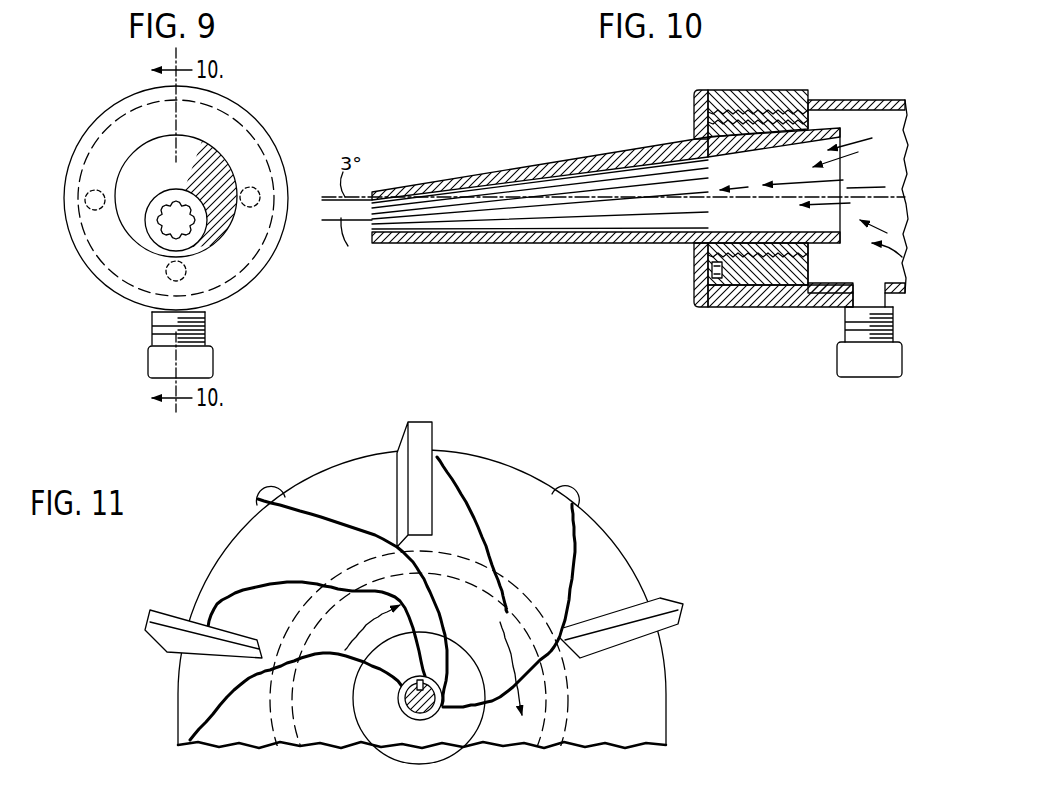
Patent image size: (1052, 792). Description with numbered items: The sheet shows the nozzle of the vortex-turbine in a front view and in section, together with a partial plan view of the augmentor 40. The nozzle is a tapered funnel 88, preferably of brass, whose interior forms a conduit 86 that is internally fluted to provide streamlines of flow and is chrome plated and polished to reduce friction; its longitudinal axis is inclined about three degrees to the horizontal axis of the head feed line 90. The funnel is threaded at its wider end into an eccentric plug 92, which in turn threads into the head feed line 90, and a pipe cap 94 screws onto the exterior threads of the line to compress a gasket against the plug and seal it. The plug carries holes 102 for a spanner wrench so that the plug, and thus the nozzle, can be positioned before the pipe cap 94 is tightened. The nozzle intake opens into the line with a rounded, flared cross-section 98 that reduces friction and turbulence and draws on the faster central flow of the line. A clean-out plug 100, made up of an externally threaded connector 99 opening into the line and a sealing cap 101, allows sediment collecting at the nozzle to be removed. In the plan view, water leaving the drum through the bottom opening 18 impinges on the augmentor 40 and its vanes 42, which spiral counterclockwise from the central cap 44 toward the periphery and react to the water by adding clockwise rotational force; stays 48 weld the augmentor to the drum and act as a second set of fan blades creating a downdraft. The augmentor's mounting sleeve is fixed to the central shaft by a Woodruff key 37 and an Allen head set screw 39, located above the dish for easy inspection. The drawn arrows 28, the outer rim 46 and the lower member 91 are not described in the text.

In FIG. 11, the bottom opening 18 is at (530, 580).
In FIG. 11, the direction of rotation 28 is at (433, 660).
In FIG. 11, the Woodruff key 37 is at (421, 680).
In FIG. 11, the Allen head set screw 39 is at (433, 712).
In FIG. 11, the augmentor 40 is at (347, 458).
In FIG. 11, the vanes 42 is at (375, 520).
In FIG. 11, the central cap 44 is at (355, 705).
In FIG. 11, the impeller rim / shroud 46 is at (315, 482).
In FIG. 11, the stays 48 is at (438, 436).
In FIG. 10, the conduit 86 is at (583, 168).
In FIG. 9, the tapered funnel 88 is at (142, 168).
In FIG. 10, the tapered funnel 88 is at (506, 170).
In FIG. 10, the head feed line 90 is at (848, 100).
In FIG. 10, the flange plate 91 is at (694, 292).
In FIG. 9, the eccentric plug 92 is at (243, 118).
In FIG. 10, the eccentric plug 92 is at (778, 266).
In FIG. 9, the pipe cap 94 is at (113, 112).
In FIG. 10, the pipe cap 94 is at (694, 122).
In FIG. 10, the rounded, flared cross-section 98 is at (845, 226).
In FIG. 9, the externally threaded connector 99 is at (202, 322).
In FIG. 10, the externally threaded connector 99 is at (893, 316).
In FIG. 9, the clean-out plug 100 is at (148, 333).
In FIG. 10, the clean-out plug 100 is at (833, 328).
In FIG. 9, the cap 101 is at (155, 362).
In FIG. 10, the cap 101 is at (845, 356).
In FIG. 9, the holes 102 is at (85, 198).
In FIG. 10, the holes 102 is at (712, 270).